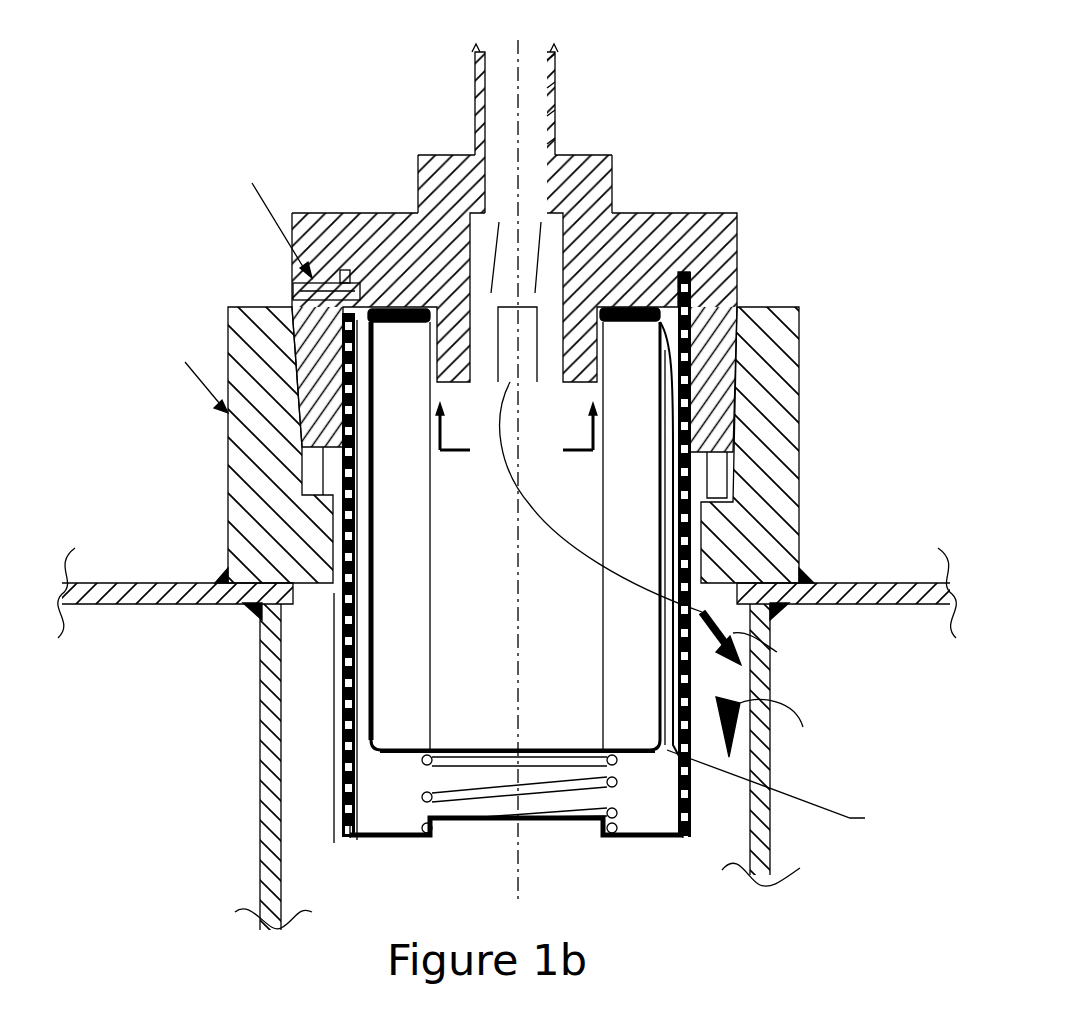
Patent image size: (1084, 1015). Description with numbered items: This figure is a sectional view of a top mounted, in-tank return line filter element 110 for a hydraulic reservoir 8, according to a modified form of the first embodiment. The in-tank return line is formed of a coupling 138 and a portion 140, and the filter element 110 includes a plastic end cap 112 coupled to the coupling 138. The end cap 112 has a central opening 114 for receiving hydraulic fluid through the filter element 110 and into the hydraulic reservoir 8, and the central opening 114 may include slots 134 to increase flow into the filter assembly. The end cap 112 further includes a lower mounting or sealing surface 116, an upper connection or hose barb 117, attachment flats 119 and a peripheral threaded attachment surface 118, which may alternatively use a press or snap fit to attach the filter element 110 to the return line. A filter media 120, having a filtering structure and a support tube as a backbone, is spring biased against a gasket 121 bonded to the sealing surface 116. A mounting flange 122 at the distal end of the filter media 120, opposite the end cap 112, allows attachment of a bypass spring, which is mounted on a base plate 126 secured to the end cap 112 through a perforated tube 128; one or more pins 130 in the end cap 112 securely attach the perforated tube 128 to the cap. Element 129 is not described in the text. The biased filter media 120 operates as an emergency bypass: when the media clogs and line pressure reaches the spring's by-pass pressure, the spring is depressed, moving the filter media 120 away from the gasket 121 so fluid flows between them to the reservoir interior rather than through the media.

The hydraulic reservoir 8 is at (178, 605).
The filter element 110 is at (350, 92).
The end cap 112 is at (700, 212).
The central opening 114 is at (572, 30).
The lower mounting or sealing surface 116 is at (372, 307).
The upper connection or hose barb 117 is at (562, 114).
The peripheral threaded attachment surface 118 is at (735, 292).
The attachment flats 119 is at (614, 180).
The filter media 120 is at (616, 655).
The gasket 121 is at (405, 307).
The mounting flange 122 is at (553, 745).
The base plate 126 is at (652, 842).
The perforated tube 128 is at (340, 673).
The end plate 129 is at (530, 790).
The pins 130 is at (306, 265).
The slots 134 is at (512, 382).
The coupling 138 is at (228, 467).
The portion 140 is at (262, 672).